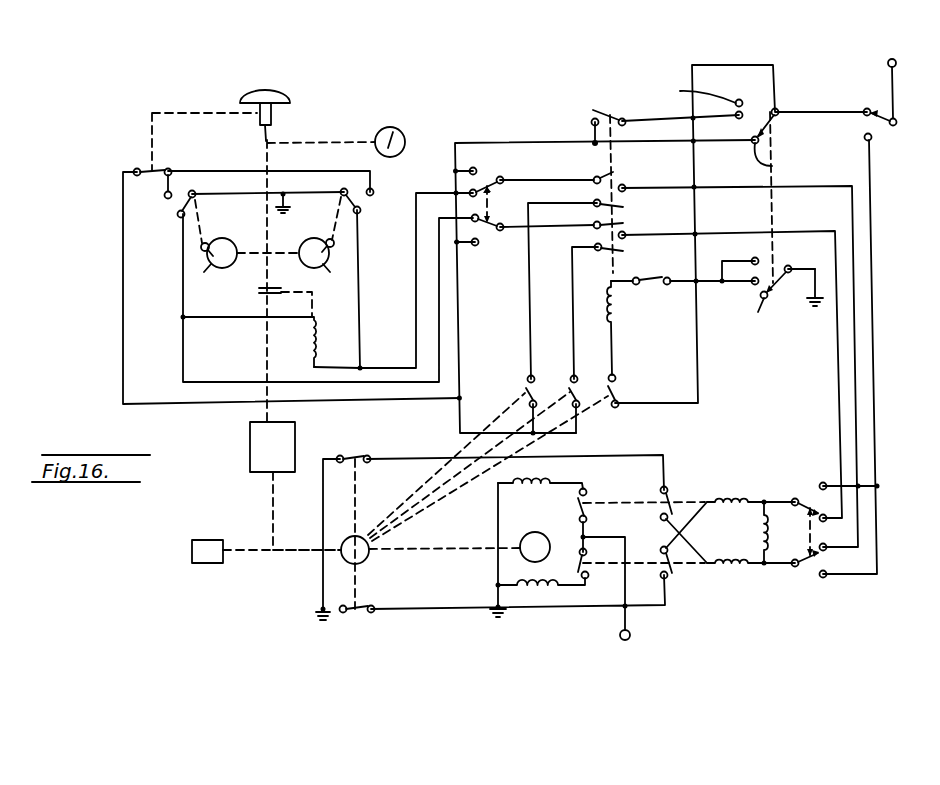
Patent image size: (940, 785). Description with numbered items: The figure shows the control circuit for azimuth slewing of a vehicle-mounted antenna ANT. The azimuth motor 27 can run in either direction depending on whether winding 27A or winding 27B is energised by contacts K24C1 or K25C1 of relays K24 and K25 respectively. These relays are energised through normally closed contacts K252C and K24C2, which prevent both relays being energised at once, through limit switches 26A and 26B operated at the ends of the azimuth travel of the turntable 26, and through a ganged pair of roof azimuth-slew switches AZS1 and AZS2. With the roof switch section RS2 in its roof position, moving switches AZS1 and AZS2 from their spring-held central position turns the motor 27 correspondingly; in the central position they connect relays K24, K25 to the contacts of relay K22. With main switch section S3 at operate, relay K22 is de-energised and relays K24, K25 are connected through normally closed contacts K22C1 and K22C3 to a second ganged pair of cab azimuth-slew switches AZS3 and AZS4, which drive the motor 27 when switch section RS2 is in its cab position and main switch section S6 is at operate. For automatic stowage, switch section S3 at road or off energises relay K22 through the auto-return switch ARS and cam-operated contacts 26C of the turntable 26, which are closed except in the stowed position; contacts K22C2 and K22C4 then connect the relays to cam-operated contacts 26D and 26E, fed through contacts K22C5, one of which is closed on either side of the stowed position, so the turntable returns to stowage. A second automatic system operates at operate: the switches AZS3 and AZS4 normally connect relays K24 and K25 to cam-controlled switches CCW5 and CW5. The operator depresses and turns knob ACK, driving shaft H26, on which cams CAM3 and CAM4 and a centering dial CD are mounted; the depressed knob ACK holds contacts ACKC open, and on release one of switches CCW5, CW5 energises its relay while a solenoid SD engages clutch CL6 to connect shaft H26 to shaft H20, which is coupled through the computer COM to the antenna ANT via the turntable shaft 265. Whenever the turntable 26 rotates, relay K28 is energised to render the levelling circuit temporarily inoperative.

The knob ACK is at (283, 101).
The contacts ACKC is at (131, 170).
The shaft H26 is at (263, 138).
The centering dial CD is at (401, 131).
The cam-controlled switch CCW5 is at (236, 209).
The cam-controlled switch CW5 is at (378, 204).
The cam CAM4 is at (216, 264).
The cam CAM3 is at (312, 264).
The clutch CL6 is at (257, 292).
The solenoid SD is at (249, 342).
The shaft H20 is at (270, 345).
The computer COM is at (307, 432).
The antenna ANT is at (210, 548).
The shaft of the turntable 265 is at (294, 553).
The turntable 26 is at (366, 557).
The limit switch 26A is at (360, 447).
The limit switch 26B is at (361, 626).
The cam-operated contacts 26C is at (609, 386).
The cam-operated contacts 26D is at (526, 388).
The cam-operated contacts 26E is at (569, 388).
The relay K22 is at (616, 305).
The auto-return switch ARS is at (683, 270).
The contacts of relay K22 K22C5 is at (569, 115).
The normally closed contacts of relay K22 K22C1 is at (613, 172).
The contacts of relay K22 K22C2 is at (644, 201).
The normally closed contacts of relay K22 K22C3 is at (596, 225).
The contacts of relay K22 K22C4 is at (644, 246).
The azimuth-slew switch AZS3 is at (498, 177).
The azimuth-slew switch AZS4 is at (492, 238).
The main switch section S6 is at (751, 127).
The roof switch section RS2 is at (886, 128).
The main switch section S3 is at (776, 268).
The motor 27 is at (541, 540).
The winding 27A is at (540, 470).
The winding 27B is at (540, 590).
The contacts of relay K24 K24C1 is at (580, 497).
The contacts of relay K25 K25C1 is at (578, 568).
The normally closed contacts of relay K24 K24C2 is at (668, 492).
The normally closed contacts of relay K25 K252C is at (672, 568).
The relay K24 is at (751, 514).
The relay K25 is at (751, 549).
The relay K28 is at (772, 534).
The azimuth-slew switch AZS1 is at (803, 498).
The azimuth-slew switch AZS2 is at (804, 567).